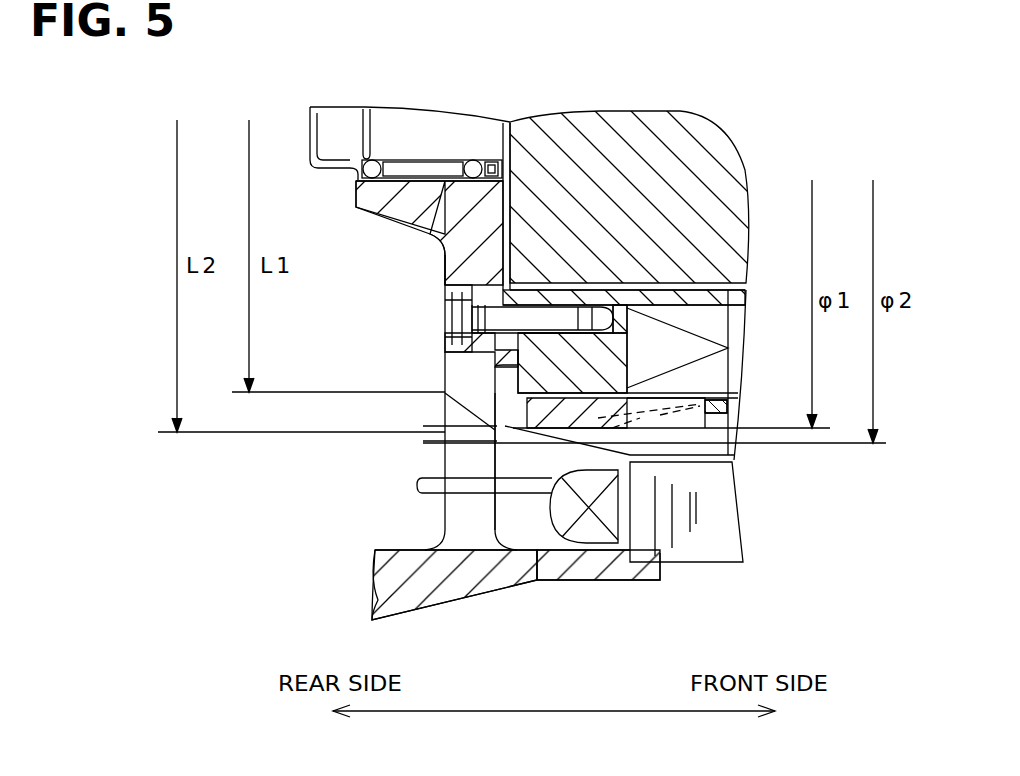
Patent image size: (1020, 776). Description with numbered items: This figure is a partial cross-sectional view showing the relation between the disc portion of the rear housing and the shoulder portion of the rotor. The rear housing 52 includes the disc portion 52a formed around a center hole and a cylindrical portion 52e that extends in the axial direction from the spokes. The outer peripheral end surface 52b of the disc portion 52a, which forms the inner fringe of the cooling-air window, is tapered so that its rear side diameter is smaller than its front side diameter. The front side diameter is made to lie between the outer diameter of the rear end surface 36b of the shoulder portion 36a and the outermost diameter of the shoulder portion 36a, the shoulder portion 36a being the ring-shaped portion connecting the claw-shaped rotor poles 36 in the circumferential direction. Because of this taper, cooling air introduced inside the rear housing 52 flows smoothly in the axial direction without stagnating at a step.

The claw-shaped rotor poles 36 is at (668, 410).
The shoulder portion 36a is at (578, 415).
The rear end surface of the shoulder portion 36b is at (528, 412).
The rear housing 52 is at (395, 575).
The disc portion 52a is at (445, 265).
The outer peripheral end surface 52b is at (488, 435).
The cylindrical portion 52e is at (548, 580).